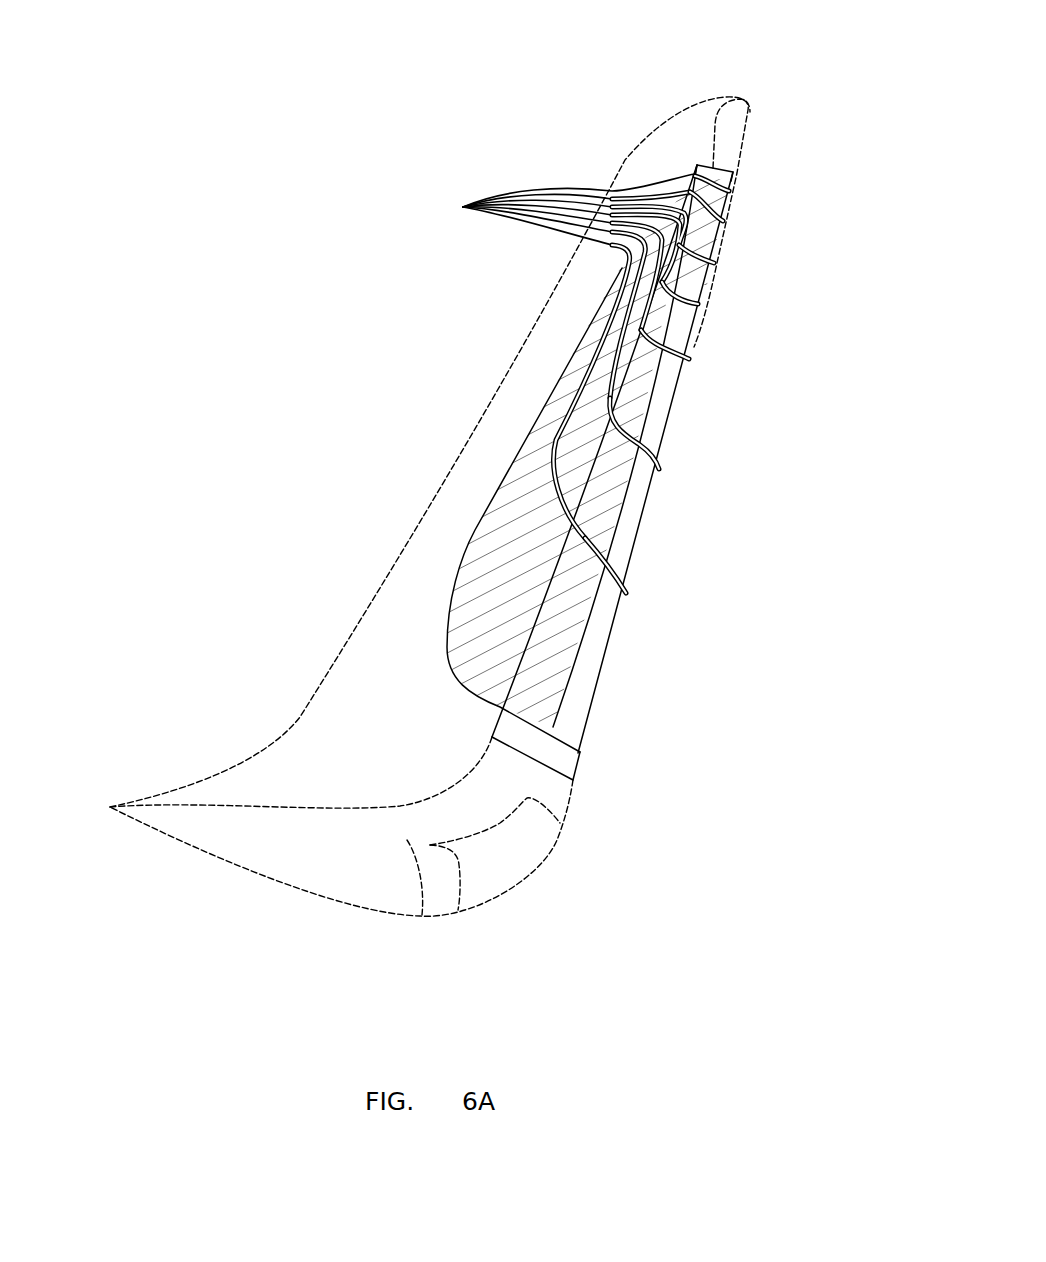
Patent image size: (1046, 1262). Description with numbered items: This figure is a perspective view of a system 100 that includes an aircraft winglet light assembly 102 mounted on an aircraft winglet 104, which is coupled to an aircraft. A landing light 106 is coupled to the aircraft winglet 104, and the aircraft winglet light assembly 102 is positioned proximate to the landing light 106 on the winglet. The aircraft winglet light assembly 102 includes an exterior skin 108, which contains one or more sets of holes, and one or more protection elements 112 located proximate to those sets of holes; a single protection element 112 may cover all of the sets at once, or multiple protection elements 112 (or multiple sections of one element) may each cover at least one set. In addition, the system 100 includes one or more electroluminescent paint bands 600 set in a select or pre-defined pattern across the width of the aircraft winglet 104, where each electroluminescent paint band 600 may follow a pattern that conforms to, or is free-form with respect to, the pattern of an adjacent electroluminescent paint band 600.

The system 100 is at (235, 108).
The aircraft winglet light assembly 102 is at (752, 540).
The aircraft winglet 104 is at (330, 750).
The landing light 106 is at (528, 852).
The exterior skin 108 is at (717, 160).
The protection element 112 is at (727, 190).
The electroluminescent paint band 600 is at (463, 207).